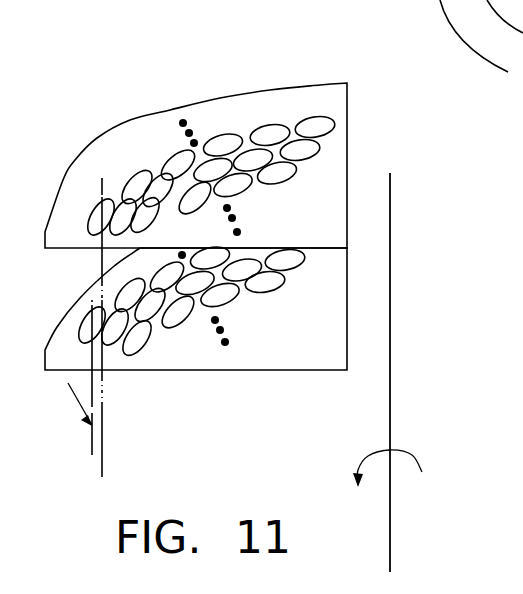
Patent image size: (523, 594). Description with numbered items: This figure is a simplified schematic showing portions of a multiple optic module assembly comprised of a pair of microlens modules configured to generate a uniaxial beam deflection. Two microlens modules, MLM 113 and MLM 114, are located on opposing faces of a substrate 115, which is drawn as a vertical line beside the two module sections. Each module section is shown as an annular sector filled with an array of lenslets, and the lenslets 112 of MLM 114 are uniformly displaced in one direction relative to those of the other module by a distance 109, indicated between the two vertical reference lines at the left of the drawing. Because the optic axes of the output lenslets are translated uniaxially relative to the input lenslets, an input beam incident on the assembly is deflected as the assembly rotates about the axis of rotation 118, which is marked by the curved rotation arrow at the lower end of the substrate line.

The distance 109 is at (103, 450).
The lenslets 112 is at (268, 283).
The MLM 113 is at (72, 160).
The MLM 114 is at (43, 327).
The substrate 115 is at (370, 167).
The axis of rotation 118 is at (407, 530).